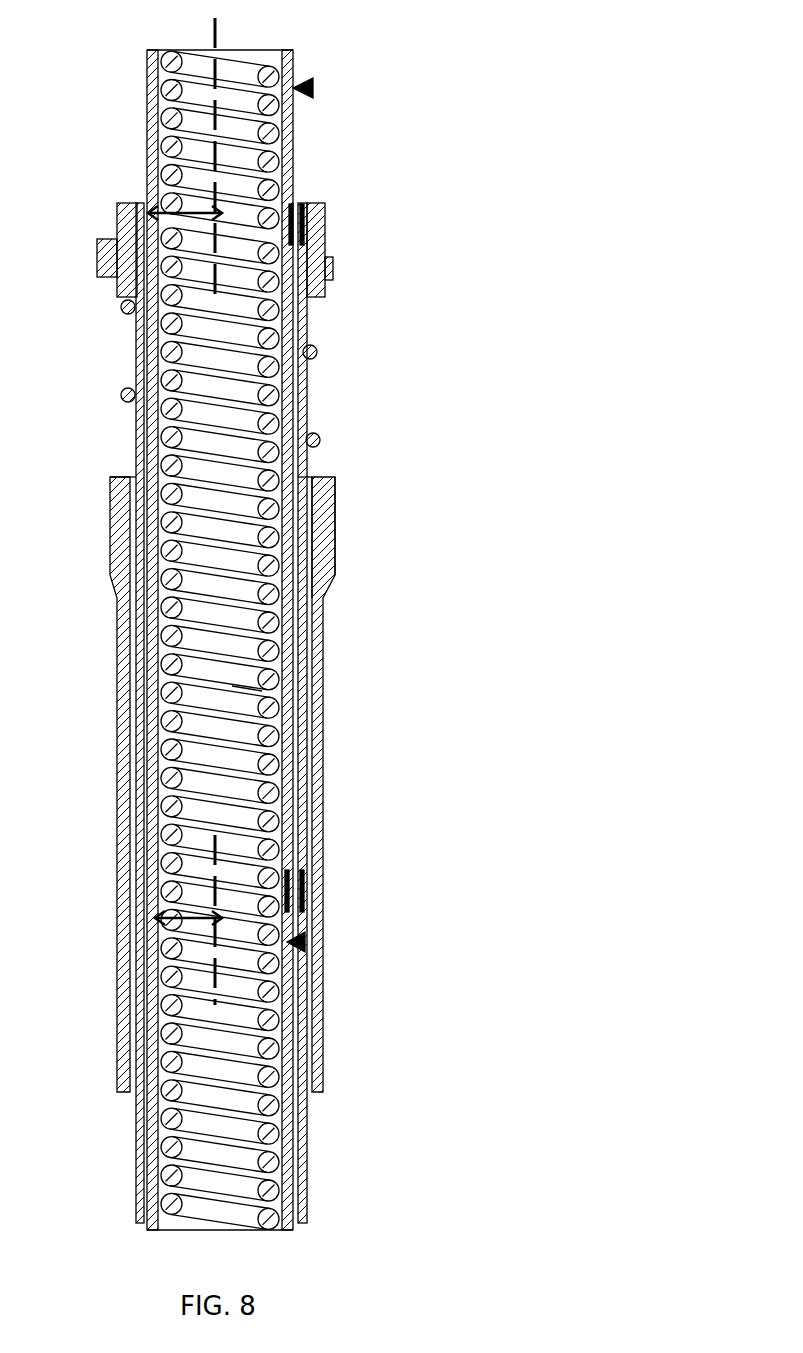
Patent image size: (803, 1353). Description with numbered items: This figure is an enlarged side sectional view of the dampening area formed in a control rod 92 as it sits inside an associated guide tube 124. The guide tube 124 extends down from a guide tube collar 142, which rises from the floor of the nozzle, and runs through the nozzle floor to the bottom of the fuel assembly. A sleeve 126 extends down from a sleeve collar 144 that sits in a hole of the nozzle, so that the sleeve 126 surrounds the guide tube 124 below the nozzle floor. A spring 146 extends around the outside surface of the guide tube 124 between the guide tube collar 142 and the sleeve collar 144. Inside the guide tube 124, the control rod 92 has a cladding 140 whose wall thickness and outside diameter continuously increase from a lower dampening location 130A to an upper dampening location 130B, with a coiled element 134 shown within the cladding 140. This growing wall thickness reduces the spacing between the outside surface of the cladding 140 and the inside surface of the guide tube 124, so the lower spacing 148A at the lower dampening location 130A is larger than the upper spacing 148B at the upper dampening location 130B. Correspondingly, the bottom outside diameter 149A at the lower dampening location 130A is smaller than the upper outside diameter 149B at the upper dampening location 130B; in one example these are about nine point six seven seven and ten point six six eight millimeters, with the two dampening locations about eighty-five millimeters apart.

The control rod 92 is at (157, 67).
The guide tube 124 is at (137, 428).
The sleeve 126 is at (313, 665).
The lower dampening location 130A is at (305, 942).
The upper dampening location 130B is at (313, 88).
The coil wire 134 is at (235, 688).
The cladding 140 is at (305, 172).
The guide tube collar 142 is at (123, 262).
The sleeve collar 144 is at (322, 486).
The spring 146 is at (318, 352).
The lower spacing 148A is at (296, 868).
The upper spacing 148B is at (303, 207).
The bottom outside diameter 149A is at (185, 918).
The upper outside diameter 149B is at (181, 213).